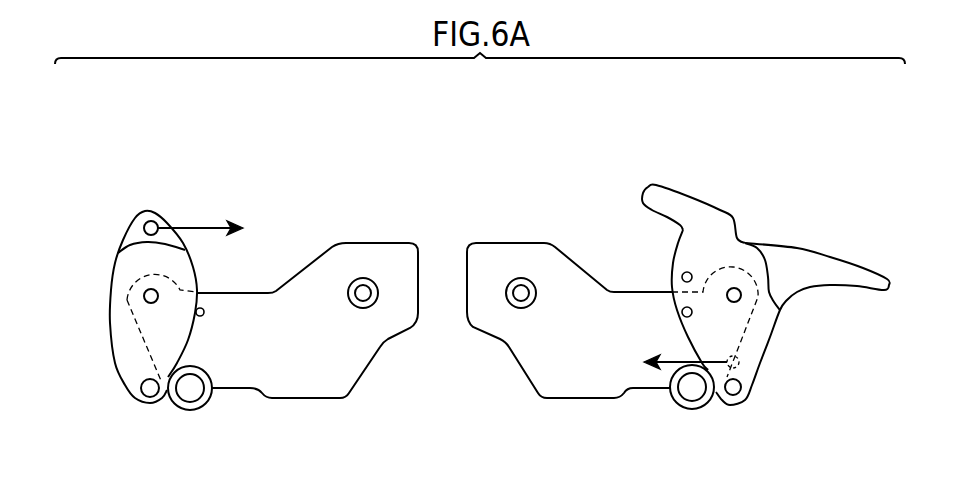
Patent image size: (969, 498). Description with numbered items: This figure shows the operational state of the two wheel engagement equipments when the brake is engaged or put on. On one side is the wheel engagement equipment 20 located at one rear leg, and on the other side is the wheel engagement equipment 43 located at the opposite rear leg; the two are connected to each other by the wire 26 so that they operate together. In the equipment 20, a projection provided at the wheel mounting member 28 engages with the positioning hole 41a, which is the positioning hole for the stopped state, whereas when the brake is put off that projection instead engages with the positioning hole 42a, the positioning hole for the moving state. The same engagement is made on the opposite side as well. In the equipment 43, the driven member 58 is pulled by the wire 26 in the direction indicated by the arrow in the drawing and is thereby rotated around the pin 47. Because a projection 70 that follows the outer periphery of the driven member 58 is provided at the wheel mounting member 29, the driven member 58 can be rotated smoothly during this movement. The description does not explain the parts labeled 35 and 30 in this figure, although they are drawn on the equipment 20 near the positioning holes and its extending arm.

The wheel engagement equipment 20 is at (792, 175).
The wheel engagement equipment 43 is at (155, 175).
The wire 26 is at (203, 224).
The projection 70 is at (204, 310).
The driven member 58 is at (128, 270).
The pin 47 is at (148, 296).
The wheel mounting member 29 is at (303, 378).
The wheel mounting member 28 is at (577, 378).
The positioning hole for a moving state 42a is at (688, 271).
The positioning hole for a stopped state 41a is at (693, 312).
The support shaft 35 is at (758, 297).
The arm portion 30 is at (862, 268).